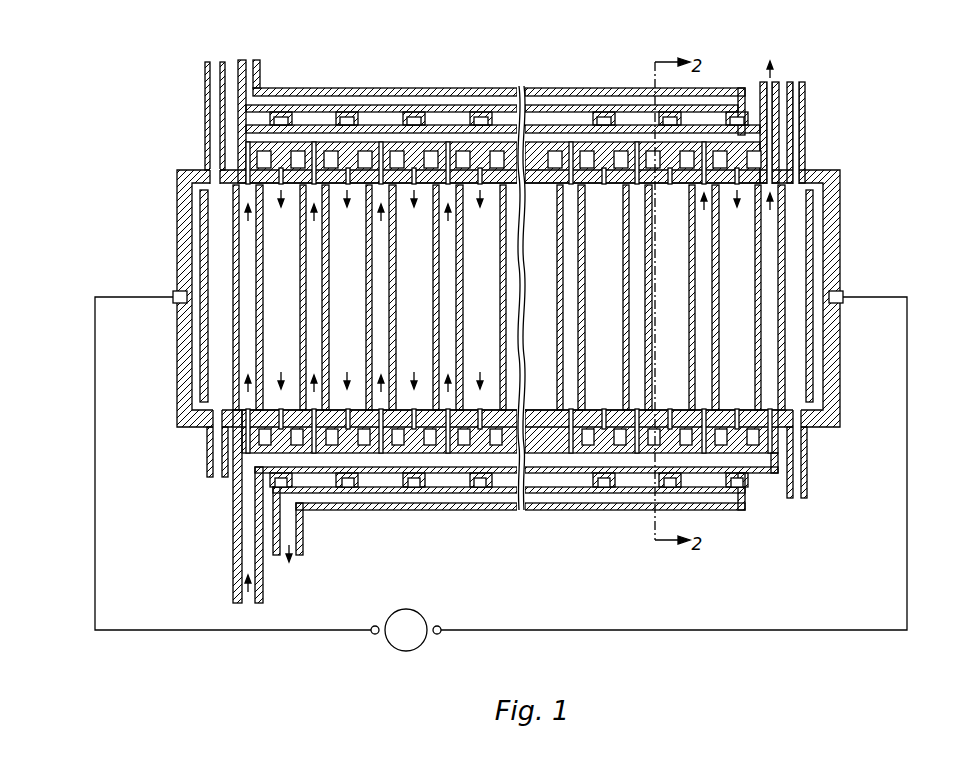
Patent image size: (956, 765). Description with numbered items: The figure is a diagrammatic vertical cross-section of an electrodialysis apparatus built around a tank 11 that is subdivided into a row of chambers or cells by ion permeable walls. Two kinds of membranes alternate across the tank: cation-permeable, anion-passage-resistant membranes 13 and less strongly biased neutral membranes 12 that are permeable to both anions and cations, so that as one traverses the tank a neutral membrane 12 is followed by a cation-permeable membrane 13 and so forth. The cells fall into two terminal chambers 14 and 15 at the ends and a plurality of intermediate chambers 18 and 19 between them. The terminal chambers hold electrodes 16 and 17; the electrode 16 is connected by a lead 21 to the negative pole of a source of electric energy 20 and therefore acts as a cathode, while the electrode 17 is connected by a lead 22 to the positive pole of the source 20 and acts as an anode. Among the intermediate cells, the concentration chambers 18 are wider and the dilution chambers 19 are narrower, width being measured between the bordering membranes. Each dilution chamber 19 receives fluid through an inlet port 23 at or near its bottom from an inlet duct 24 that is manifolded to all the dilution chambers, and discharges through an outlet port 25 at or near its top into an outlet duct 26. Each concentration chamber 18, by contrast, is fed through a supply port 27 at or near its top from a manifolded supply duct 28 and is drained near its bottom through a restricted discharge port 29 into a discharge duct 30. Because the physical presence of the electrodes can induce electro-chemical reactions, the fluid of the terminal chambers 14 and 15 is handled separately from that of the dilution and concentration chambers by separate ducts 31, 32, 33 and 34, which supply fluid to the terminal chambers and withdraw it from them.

The tank 11 is at (179, 424).
The neutral membrane 12 is at (264, 268).
The cation-permeable membrane 13 is at (233, 331).
The terminal chamber 14 is at (788, 313).
The terminal chamber 15 is at (217, 305).
The electrode 16 is at (202, 366).
The electrode 17 is at (813, 243).
The concentration chamber 18 is at (276, 305).
The dilution chamber 19 is at (242, 276).
The source of electric energy 20 is at (412, 617).
The lead 21 is at (96, 536).
The lead 22 is at (908, 552).
The inlet port 23 is at (510, 414).
The inlet duct 24 is at (260, 576).
The outlet port 25 is at (506, 181).
The outlet duct 26 is at (462, 134).
The supply port 27 is at (283, 194).
The supply duct 28 is at (426, 98).
The restricted discharge port 29 is at (280, 402).
The discharge duct 30 is at (467, 504).
The duct 31 is at (804, 108).
The duct 32 is at (806, 480).
The duct 33 is at (215, 93).
The duct 34 is at (224, 478).